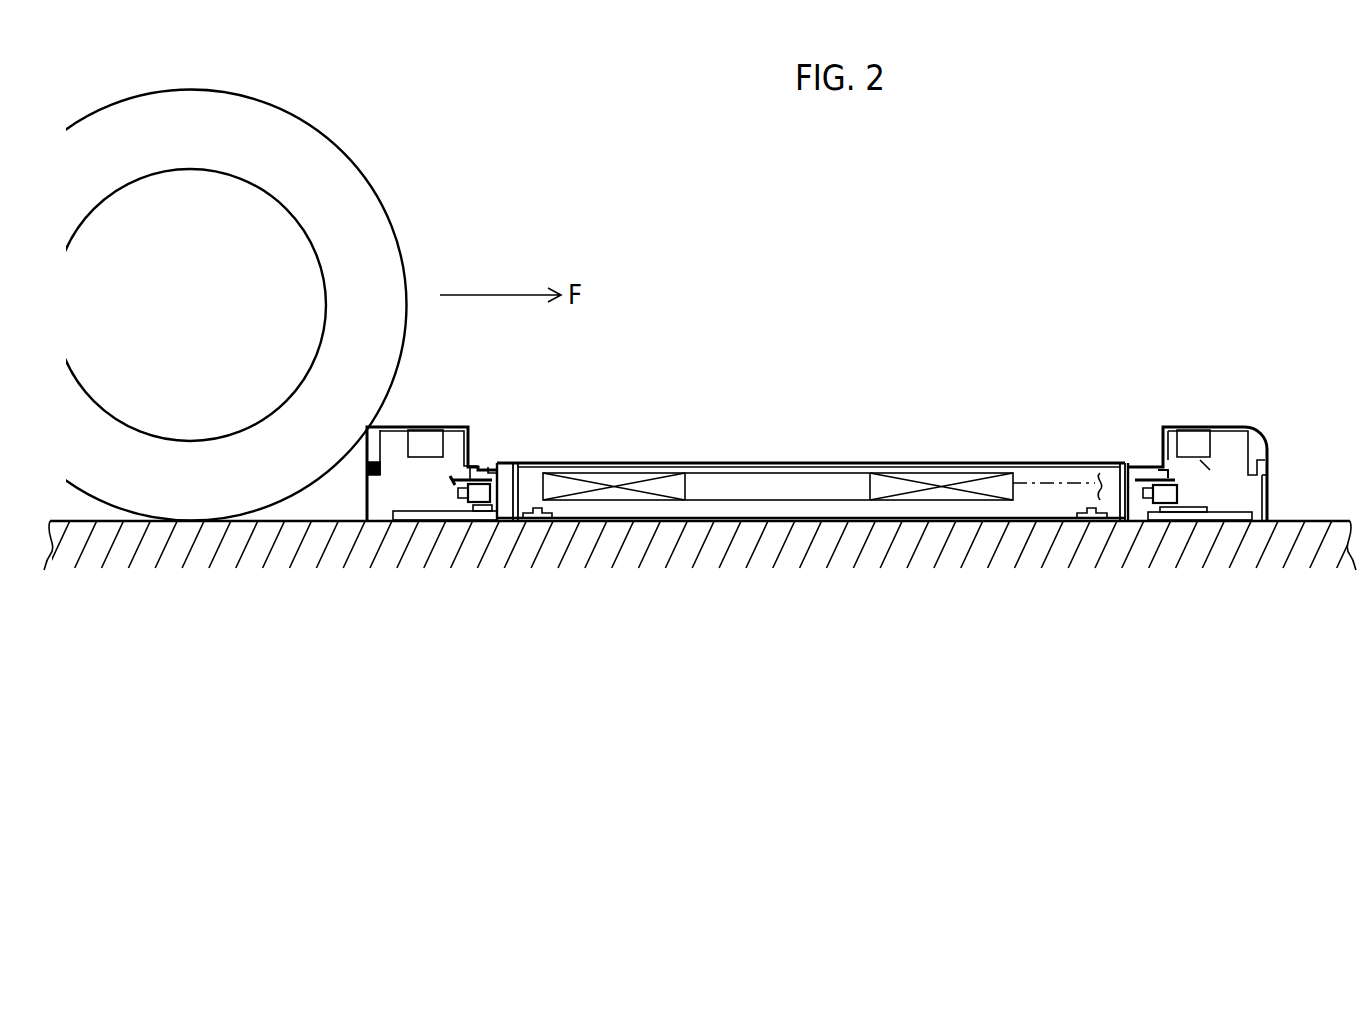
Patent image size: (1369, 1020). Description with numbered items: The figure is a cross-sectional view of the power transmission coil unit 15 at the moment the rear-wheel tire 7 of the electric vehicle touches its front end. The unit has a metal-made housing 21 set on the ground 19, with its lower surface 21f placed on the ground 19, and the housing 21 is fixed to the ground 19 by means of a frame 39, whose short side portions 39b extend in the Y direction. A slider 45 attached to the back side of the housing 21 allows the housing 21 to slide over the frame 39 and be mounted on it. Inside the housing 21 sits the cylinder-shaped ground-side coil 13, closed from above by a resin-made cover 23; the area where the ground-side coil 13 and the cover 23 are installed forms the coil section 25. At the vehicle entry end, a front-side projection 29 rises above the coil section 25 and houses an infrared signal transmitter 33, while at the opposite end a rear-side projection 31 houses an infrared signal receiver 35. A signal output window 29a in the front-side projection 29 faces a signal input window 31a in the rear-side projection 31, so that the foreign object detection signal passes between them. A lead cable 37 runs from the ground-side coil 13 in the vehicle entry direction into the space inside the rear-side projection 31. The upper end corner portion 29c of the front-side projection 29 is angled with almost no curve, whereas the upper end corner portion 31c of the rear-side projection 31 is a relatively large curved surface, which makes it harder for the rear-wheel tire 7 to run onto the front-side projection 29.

The rear-wheel tire 7 is at (358, 203).
The ground-side coil 13 is at (940, 500).
The power transmission coil unit 15 is at (842, 496).
The ground 19 is at (1318, 520).
The housing 21 is at (1181, 410).
The lower surface 21f is at (760, 520).
The cover 23 is at (850, 465).
The coil section 25 is at (953, 650).
The front-side projection 29 is at (465, 459).
The signal output window 29a is at (476, 446).
The upper end corner portion 29c is at (367, 430).
The rear-side projection 31 is at (1201, 470).
The signal input window 31a is at (1163, 462).
The upper end corner portion 31c is at (1260, 430).
The infrared signal transmitter 33 is at (436, 458).
The infrared signal receiver 35 is at (1200, 462).
The lead cable 37 is at (1048, 487).
The frame 39 is at (822, 584).
The short side portions 39b is at (485, 512).
The slider 45 is at (492, 500).